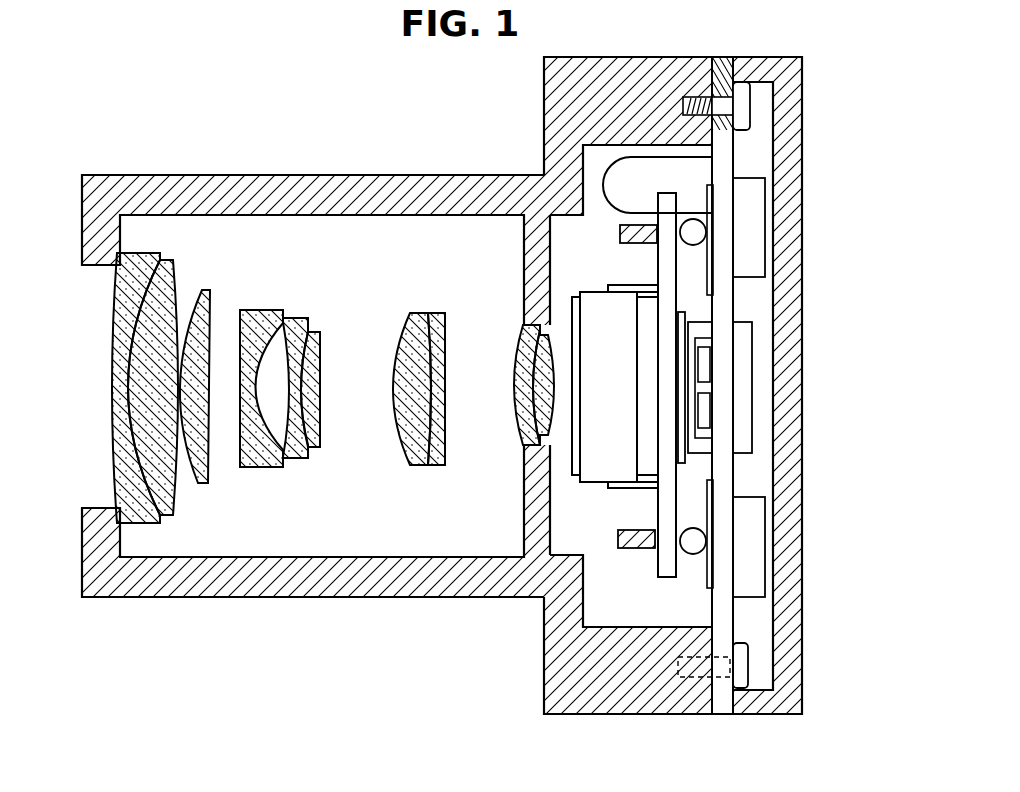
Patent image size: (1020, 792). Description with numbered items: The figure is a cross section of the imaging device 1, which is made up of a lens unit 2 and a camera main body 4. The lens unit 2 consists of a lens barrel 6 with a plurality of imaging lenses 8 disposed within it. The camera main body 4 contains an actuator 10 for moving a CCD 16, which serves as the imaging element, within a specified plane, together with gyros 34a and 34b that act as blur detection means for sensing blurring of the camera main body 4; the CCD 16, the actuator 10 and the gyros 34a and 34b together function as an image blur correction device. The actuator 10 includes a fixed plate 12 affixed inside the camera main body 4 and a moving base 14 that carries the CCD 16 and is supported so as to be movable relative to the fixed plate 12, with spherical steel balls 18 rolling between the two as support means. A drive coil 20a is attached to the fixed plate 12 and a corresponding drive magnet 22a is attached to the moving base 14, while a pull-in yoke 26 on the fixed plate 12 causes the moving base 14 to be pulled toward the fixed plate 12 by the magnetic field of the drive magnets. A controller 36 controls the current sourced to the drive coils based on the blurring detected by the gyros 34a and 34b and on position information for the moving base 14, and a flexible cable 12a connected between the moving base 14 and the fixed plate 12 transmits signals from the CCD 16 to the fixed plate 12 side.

The imaging device 1 is at (482, 391).
The lens unit 2 is at (318, 349).
The camera main body 4 is at (622, 76).
The lens barrel 6 is at (352, 190).
The imaging lenses 8 is at (170, 513).
The actuator 10 is at (665, 408).
The fixed plate 12 is at (664, 385).
The flexible cable 12a is at (602, 172).
The moving base 14 is at (665, 572).
The CCD 16 is at (607, 457).
The steel balls 18 is at (698, 541).
The drive coil 20a is at (698, 352).
The drive magnet 22a is at (681, 312).
The pull-in yoke 26 is at (738, 392).
The gyro 34a is at (707, 415).
The gyro 34b is at (708, 368).
The controller 36 is at (750, 208).